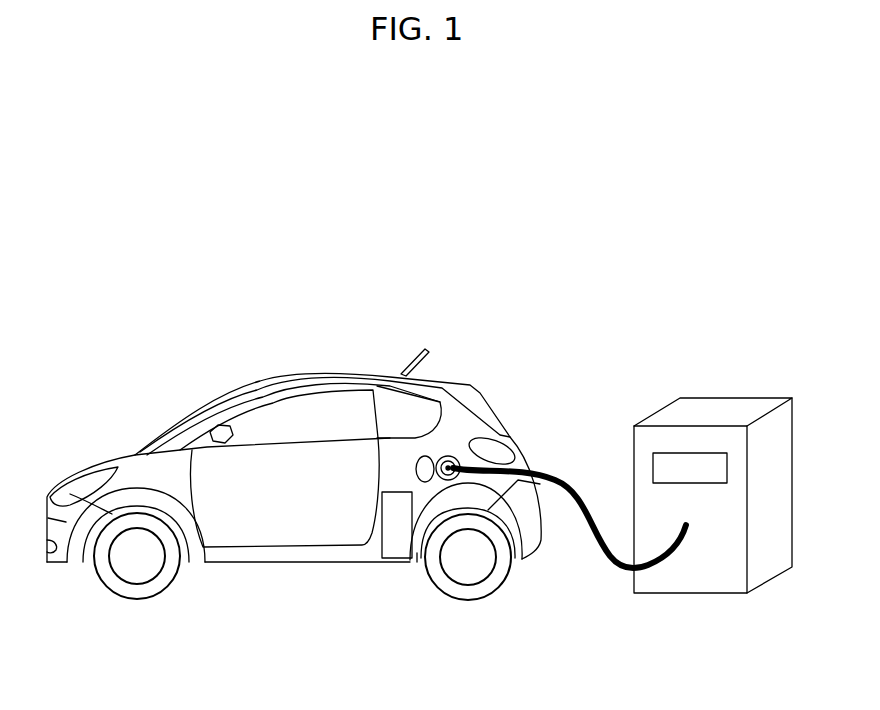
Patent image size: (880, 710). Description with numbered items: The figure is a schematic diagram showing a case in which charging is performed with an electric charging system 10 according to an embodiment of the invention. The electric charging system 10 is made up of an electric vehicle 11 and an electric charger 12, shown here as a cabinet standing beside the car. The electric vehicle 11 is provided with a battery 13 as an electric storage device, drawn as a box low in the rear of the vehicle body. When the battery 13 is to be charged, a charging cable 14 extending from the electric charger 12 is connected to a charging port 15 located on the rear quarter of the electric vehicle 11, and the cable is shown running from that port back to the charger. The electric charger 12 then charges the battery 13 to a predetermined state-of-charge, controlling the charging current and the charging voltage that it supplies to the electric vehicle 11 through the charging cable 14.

The electric charging system 10 is at (504, 294).
The electric vehicle 11 is at (296, 372).
The electric charger 12 is at (696, 403).
The battery 13 is at (392, 563).
The charging cable 14 is at (592, 533).
The charging port 15 is at (450, 456).